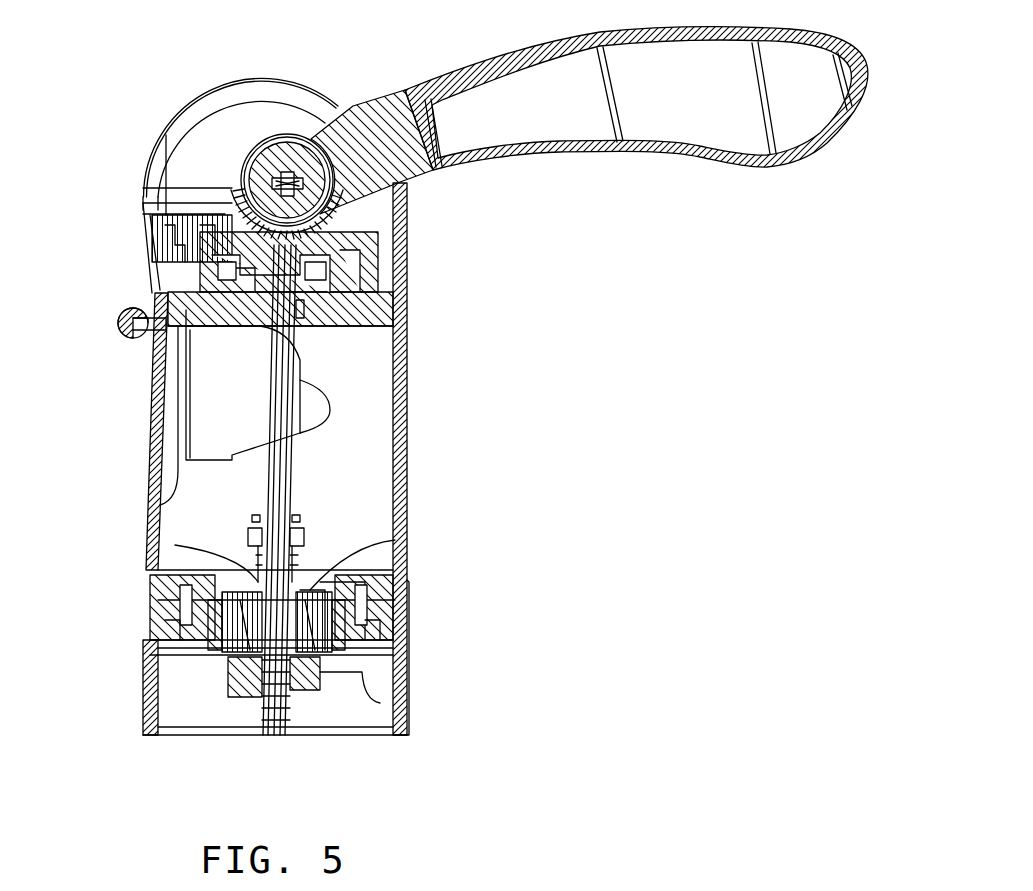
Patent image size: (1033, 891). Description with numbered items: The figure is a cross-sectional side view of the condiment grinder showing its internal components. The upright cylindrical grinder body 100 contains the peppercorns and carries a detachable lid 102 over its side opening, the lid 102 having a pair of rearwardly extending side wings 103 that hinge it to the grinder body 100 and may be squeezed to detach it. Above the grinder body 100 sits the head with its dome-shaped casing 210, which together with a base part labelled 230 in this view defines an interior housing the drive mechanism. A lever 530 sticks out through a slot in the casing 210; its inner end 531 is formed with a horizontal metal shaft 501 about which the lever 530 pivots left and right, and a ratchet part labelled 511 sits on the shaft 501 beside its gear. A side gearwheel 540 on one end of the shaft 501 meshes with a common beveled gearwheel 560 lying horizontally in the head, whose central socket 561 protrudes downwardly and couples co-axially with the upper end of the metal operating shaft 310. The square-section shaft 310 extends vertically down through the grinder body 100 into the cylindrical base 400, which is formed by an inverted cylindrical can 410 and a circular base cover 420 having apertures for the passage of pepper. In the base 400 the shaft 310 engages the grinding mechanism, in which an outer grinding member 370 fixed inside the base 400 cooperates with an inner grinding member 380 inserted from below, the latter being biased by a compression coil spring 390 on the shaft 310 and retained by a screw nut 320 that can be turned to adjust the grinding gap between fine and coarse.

The grinder body 100 is at (450, 403).
The lid 102 is at (157, 418).
The side wings 103 is at (222, 445).
The dome-shaped casing 210 is at (213, 92).
The head cover plate 230 is at (287, 97).
The operating shaft 310 is at (290, 481).
The screw nut 320 is at (240, 682).
The outer grinding member 370 is at (333, 574).
The inner grinding member 380 is at (313, 655).
The compression coil spring 390 is at (258, 556).
The base 400 is at (358, 615).
The inverted cylindrical can 410 is at (452, 627).
The base cover 420 is at (380, 704).
The shaft 501 is at (252, 158).
The hub bore 511 is at (255, 167).
The lever 530 is at (572, 135).
The inner end 531 is at (272, 163).
The side gearwheel 540 is at (158, 200).
The beveled gearwheel 560 is at (350, 263).
The central socket 561 is at (301, 312).